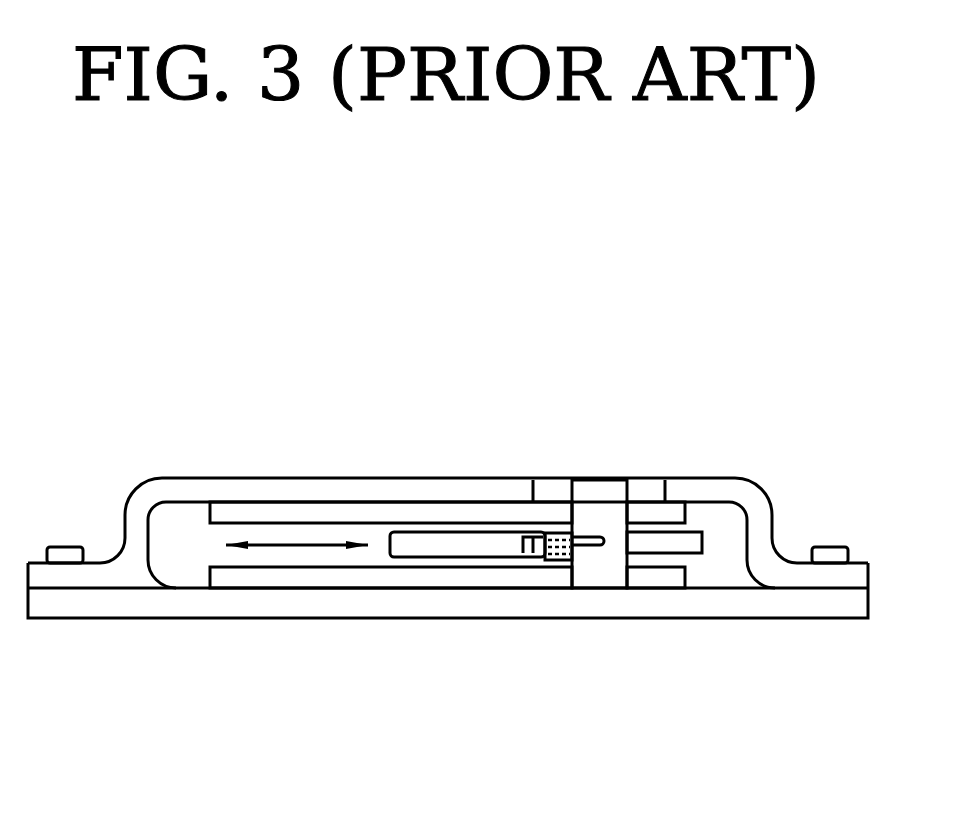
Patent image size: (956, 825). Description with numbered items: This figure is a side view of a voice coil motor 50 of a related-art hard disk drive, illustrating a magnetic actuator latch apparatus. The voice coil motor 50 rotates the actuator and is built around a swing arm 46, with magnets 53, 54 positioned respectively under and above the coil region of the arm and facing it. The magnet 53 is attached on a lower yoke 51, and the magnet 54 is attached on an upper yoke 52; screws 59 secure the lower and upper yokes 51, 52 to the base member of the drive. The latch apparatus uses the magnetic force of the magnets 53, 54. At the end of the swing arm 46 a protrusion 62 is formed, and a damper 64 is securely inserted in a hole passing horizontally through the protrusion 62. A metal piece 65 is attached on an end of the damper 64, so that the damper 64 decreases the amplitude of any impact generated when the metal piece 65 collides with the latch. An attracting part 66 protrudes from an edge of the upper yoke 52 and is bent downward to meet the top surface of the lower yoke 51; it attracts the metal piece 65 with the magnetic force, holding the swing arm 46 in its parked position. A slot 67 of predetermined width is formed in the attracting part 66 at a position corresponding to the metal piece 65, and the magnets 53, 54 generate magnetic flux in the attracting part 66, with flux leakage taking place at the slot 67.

The voice coil motor 50 is at (120, 452).
The lower yoke 51 is at (203, 603).
The upper yoke 52 is at (202, 493).
The magnet 53 is at (303, 588).
The magnet 54 is at (308, 515).
The screws 59 is at (67, 547).
The swing arm 46 is at (405, 538).
The protrusion 62 is at (528, 548).
The damper 64 is at (543, 530).
The metal piece 65 is at (568, 535).
The attracting part 66 is at (608, 492).
The slot 67 is at (600, 537).